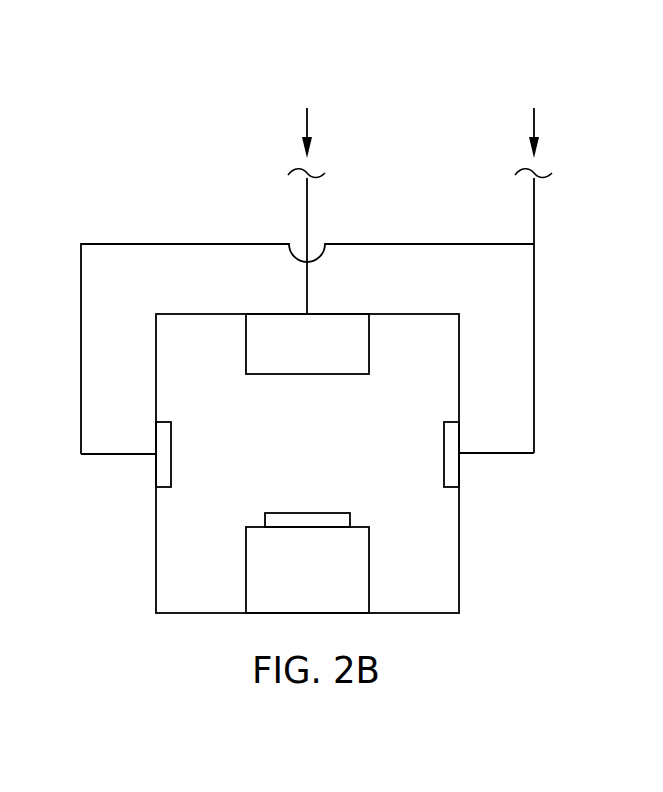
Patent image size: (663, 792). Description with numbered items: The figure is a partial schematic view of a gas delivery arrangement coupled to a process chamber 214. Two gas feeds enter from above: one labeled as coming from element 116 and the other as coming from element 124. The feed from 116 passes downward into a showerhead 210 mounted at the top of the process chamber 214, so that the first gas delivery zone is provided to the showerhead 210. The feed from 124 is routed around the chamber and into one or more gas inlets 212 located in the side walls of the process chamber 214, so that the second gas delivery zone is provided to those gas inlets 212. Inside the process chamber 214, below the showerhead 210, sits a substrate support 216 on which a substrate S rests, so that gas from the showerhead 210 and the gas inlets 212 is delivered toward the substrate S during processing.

The input from element 116 is at (307, 177).
The input from element 124 is at (534, 246).
The showerhead 210 is at (290, 357).
The gas inlets 212 is at (444, 433).
The process chamber 214 is at (156, 545).
The substrate support 216 is at (287, 586).
The substrate S is at (277, 513).